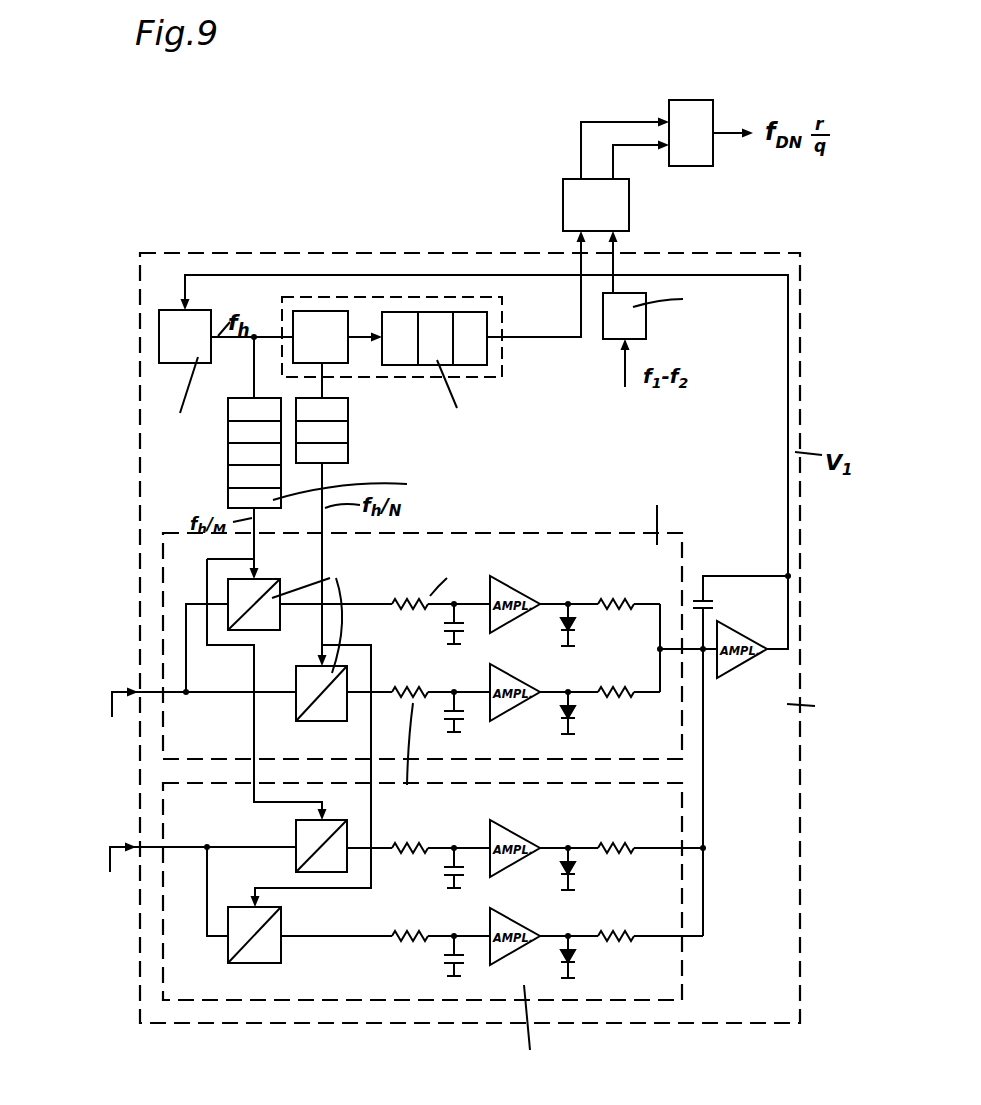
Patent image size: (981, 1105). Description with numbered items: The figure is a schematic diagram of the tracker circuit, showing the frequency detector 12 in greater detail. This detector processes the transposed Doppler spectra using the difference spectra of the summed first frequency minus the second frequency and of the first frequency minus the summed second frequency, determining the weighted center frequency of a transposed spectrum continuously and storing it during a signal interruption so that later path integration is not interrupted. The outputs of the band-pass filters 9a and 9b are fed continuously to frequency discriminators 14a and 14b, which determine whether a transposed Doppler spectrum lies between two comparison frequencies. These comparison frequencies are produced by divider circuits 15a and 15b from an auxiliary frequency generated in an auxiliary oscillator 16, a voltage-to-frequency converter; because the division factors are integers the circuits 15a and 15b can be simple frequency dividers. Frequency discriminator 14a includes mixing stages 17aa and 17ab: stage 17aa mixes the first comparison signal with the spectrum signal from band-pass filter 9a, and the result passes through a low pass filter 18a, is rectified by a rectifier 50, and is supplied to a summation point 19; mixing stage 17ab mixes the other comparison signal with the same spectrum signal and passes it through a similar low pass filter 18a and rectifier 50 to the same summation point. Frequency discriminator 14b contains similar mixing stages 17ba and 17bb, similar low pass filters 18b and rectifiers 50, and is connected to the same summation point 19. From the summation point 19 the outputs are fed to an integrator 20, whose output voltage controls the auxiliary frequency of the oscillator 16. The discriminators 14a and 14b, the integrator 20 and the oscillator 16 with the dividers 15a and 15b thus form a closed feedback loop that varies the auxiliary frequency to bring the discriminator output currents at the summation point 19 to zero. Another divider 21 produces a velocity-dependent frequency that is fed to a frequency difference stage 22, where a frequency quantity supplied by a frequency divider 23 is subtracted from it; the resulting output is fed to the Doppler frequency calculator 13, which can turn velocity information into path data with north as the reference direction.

The band-pass filter 9a is at (170, 682).
The band-pass filter 9b is at (163, 878).
The frequency detector 12 is at (138, 445).
The Doppler frequency calculator 13 is at (699, 155).
The frequency discriminator 14a is at (683, 573).
The frequency discriminator 14b is at (683, 972).
The divider circuit 15a is at (237, 452).
The divider circuit 15b is at (330, 426).
The auxiliary oscillator 16 is at (185, 355).
The mixing stage 17aa is at (262, 592).
The mixing stage 17ab is at (323, 712).
The mixing stage 17ba is at (308, 838).
The mixing stage 17bb is at (247, 952).
The low pass filter 18a is at (452, 705).
The low pass filter 18b is at (452, 950).
The summation point 19 is at (705, 652).
The integrator 20 is at (736, 662).
The divider 21 is at (440, 375).
The frequency difference stage 22 is at (573, 193).
The frequency divider 23 is at (617, 315).
The rectifier 50 is at (573, 627).